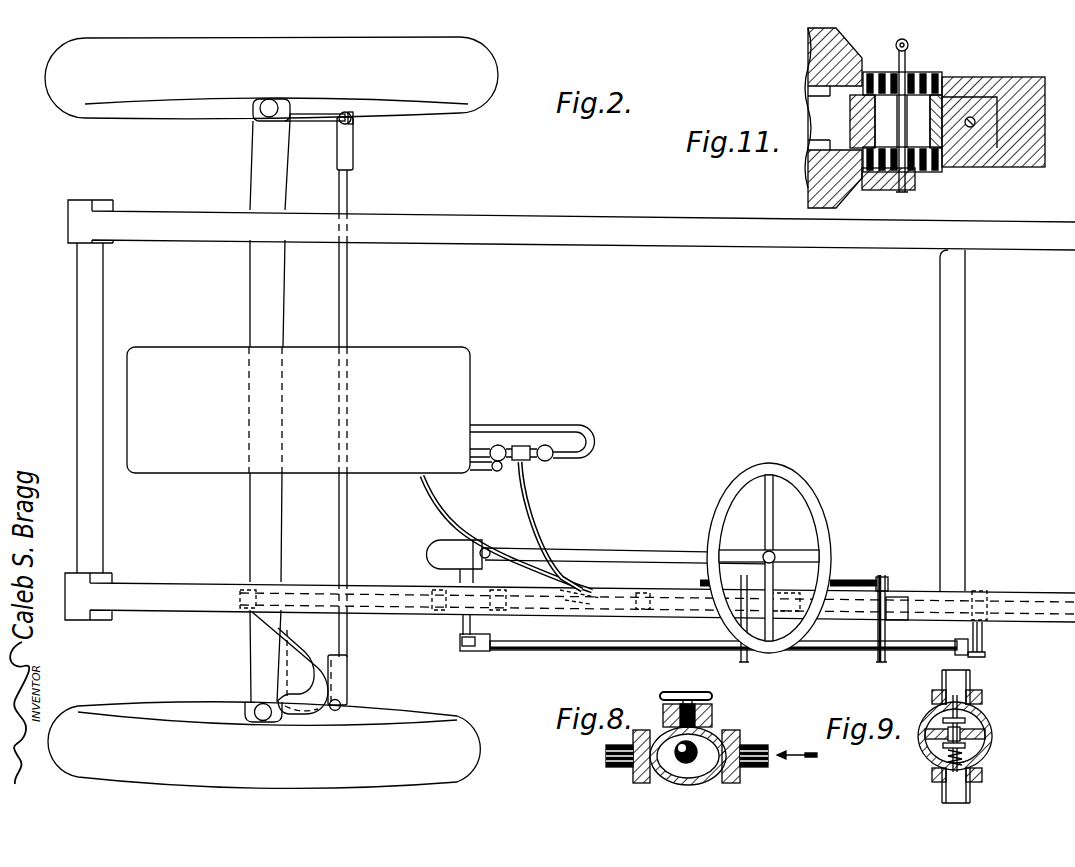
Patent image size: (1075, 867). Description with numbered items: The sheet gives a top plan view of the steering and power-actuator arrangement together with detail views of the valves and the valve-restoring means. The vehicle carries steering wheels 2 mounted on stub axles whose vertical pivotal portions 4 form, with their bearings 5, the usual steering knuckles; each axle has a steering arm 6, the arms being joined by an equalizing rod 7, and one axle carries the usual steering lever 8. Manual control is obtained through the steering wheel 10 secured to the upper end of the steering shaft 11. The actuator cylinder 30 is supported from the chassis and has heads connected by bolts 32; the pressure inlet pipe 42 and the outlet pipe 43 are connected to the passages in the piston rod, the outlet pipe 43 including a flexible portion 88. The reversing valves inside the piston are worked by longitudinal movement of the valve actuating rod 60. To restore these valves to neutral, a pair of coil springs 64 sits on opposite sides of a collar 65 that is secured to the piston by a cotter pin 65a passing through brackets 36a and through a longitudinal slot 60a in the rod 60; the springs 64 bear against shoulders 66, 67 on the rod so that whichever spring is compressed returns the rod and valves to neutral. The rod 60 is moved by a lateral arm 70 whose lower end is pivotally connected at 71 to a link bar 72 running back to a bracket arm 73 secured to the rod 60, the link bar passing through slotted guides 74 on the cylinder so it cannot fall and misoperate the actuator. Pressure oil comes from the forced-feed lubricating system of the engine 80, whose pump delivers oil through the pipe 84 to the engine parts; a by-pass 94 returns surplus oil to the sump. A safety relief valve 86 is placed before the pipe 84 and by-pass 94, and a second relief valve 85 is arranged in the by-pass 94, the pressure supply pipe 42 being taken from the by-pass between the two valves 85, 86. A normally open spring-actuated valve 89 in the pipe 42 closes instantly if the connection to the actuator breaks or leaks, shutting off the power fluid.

In FIG. 2, the steering wheels 2 is at (488, 75).
In FIG. 2, the vertical pivotal portions 4 is at (258, 708).
In FIG. 2, the bearings 5 is at (250, 714).
In FIG. 2, the steering arm 6 is at (320, 117).
In FIG. 2, the equalizing rod 7 is at (347, 292).
In FIG. 2, the steering lever 8 is at (300, 645).
In FIG. 2, the steering wheel 10 is at (832, 547).
In FIG. 2, the steering shaft 11 is at (652, 553).
In FIG. 2, the actuator cylinder 30 is at (882, 578).
In FIG. 2, the bolts 32 is at (845, 590).
In FIG. 11, the brackets 36a is at (915, 70).
In FIG. 2, the pressure inlet pipe 42 is at (598, 612).
In FIG. 2, the outlet pipe 43 is at (580, 586).
In FIG. 2, the valve actuating rod 60 is at (978, 598).
In FIG. 11, the valve actuating rod 60 is at (1025, 160).
In FIG. 11, the longitudinal slot 60a is at (833, 118).
In FIG. 11, the coil springs 64 is at (875, 62).
In FIG. 11, the collar 65 is at (932, 76).
In FIG. 11, the cotter pin 65a is at (908, 44).
In FIG. 11, the shoulder 66 is at (940, 168).
In FIG. 11, the shoulder 67 is at (884, 192).
In FIG. 2, the lateral arm 70 is at (461, 630).
In FIG. 2, the pivotal connection 71 is at (466, 651).
In FIG. 2, the link bar 72 is at (688, 650).
In FIG. 2, the bracket arm 73 is at (986, 640).
In FIG. 2, the slotted guides 74 is at (745, 662).
In FIG. 2, the motor or engine 80 is at (298, 410).
In FIG. 2, the pipe 84 is at (494, 471).
In FIG. 2, the relief valve 85 is at (545, 461).
In FIG. 8, the relief valve 85 is at (670, 782).
In FIG. 2, the safety relief valve 86 is at (498, 445).
In FIG. 2, the flexible portion 88 is at (445, 512).
In FIG. 2, the valve 89 is at (521, 446).
In FIG. 9, the valve 89 is at (993, 737).
In FIG. 2, the by-pass 94 is at (584, 443).